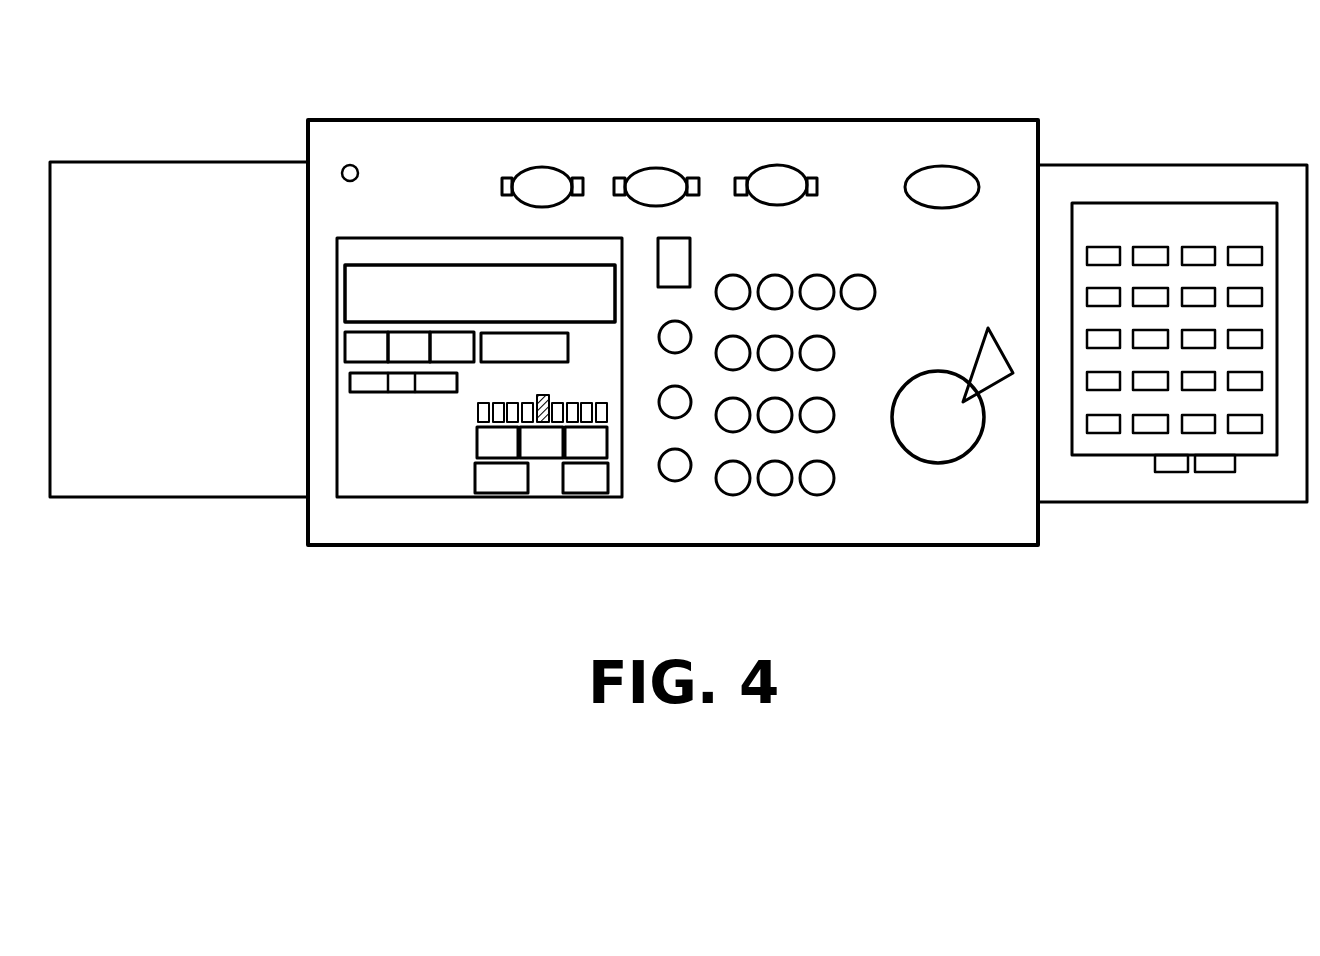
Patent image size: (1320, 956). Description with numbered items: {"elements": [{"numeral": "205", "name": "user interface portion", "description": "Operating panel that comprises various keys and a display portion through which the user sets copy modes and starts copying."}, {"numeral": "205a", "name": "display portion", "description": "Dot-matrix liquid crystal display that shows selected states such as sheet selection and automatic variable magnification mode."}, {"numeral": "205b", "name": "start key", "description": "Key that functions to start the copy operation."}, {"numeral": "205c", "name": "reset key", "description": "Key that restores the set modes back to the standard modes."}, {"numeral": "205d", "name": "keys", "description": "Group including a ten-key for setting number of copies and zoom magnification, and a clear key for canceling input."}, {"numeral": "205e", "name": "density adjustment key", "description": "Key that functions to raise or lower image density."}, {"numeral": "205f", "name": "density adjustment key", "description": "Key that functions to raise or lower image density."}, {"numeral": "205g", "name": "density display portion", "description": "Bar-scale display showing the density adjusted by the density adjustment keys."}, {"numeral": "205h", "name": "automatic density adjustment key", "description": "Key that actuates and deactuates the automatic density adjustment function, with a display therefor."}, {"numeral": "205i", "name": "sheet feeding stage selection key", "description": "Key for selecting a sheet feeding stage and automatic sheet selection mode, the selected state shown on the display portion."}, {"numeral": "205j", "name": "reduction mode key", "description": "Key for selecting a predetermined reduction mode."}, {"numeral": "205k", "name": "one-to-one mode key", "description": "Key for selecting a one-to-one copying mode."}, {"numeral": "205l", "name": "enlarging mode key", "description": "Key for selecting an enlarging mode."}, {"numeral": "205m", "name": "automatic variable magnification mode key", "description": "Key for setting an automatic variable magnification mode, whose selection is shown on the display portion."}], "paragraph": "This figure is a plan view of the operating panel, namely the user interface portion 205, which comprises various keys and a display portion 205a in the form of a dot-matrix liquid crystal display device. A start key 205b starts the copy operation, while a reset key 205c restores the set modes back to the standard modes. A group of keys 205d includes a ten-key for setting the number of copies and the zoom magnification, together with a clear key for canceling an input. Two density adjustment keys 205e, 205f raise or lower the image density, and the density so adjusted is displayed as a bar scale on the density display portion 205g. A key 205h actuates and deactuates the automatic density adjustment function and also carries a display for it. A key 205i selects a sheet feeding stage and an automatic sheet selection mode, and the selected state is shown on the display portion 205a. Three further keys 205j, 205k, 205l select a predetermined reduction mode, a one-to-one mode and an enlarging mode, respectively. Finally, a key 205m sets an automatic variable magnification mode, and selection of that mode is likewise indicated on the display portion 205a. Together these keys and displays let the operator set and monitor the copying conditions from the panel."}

The operation panel 205 is at (769, 106).
The display section 205a is at (517, 282).
The copy start key 205b is at (939, 463).
The reset key 205c is at (690, 257).
The ten-key pad 205d is at (875, 515).
The light density key 205e is at (477, 447).
The dark density key 205f is at (612, 450).
The density indicator 205g is at (564, 396).
The automatic density key 205h is at (545, 460).
The function key 205i is at (487, 365).
The reduction key 205j is at (345, 347).
The one-to-one copy key 205k is at (413, 333).
The enlargement key 205l is at (362, 366).
The magnification indicator 205m is at (367, 393).